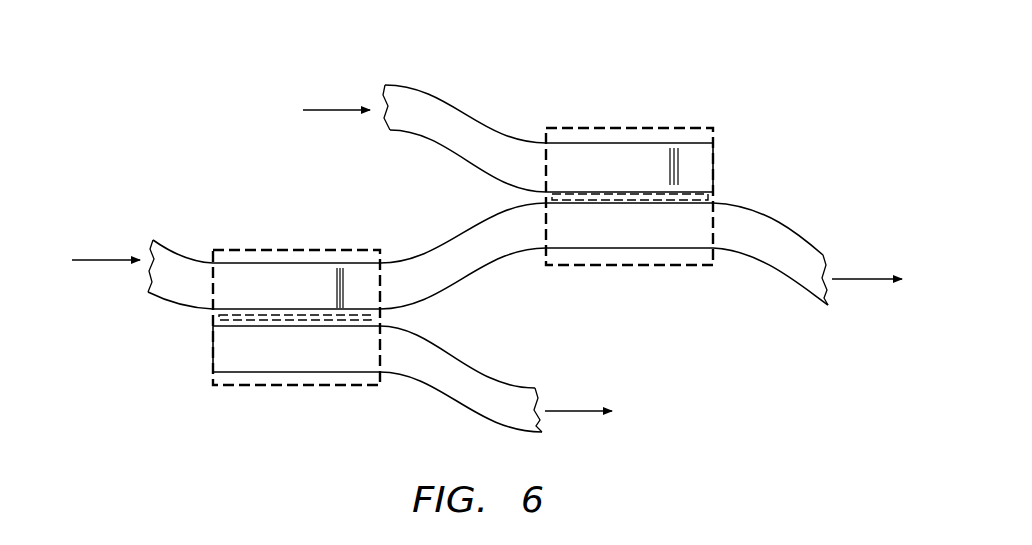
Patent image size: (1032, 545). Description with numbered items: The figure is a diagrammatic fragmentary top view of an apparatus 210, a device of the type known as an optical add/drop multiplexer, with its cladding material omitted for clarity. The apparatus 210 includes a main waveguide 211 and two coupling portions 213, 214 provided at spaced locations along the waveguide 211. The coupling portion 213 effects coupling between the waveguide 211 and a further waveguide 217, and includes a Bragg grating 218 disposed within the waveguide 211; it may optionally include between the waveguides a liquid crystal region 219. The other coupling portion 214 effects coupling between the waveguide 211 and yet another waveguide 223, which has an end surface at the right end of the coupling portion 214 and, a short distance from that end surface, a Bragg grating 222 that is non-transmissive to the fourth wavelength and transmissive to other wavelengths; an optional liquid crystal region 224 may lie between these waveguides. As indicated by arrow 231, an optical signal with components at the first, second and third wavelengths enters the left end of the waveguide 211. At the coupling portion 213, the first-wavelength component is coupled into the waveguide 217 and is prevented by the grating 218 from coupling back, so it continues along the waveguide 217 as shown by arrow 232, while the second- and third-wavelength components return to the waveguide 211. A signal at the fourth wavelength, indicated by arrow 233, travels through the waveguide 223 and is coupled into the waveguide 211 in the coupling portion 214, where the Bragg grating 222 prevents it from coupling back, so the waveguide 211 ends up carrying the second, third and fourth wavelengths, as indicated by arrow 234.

The apparatus 210 is at (210, 160).
The main waveguide 211 is at (760, 258).
The coupling portion 213 is at (264, 292).
The coupling portion 214 is at (629, 171).
The further waveguide 217 is at (455, 400).
The Bragg grating 218 is at (330, 284).
The liquid crystal region 219 is at (265, 320).
The Bragg grating 222 is at (663, 165).
The waveguide 223 is at (447, 143).
The liquid crystal region 224 is at (669, 202).
The arrow 231 is at (109, 265).
The arrow 232 is at (578, 415).
The arrow 233 is at (329, 115).
The arrow 234 is at (871, 284).